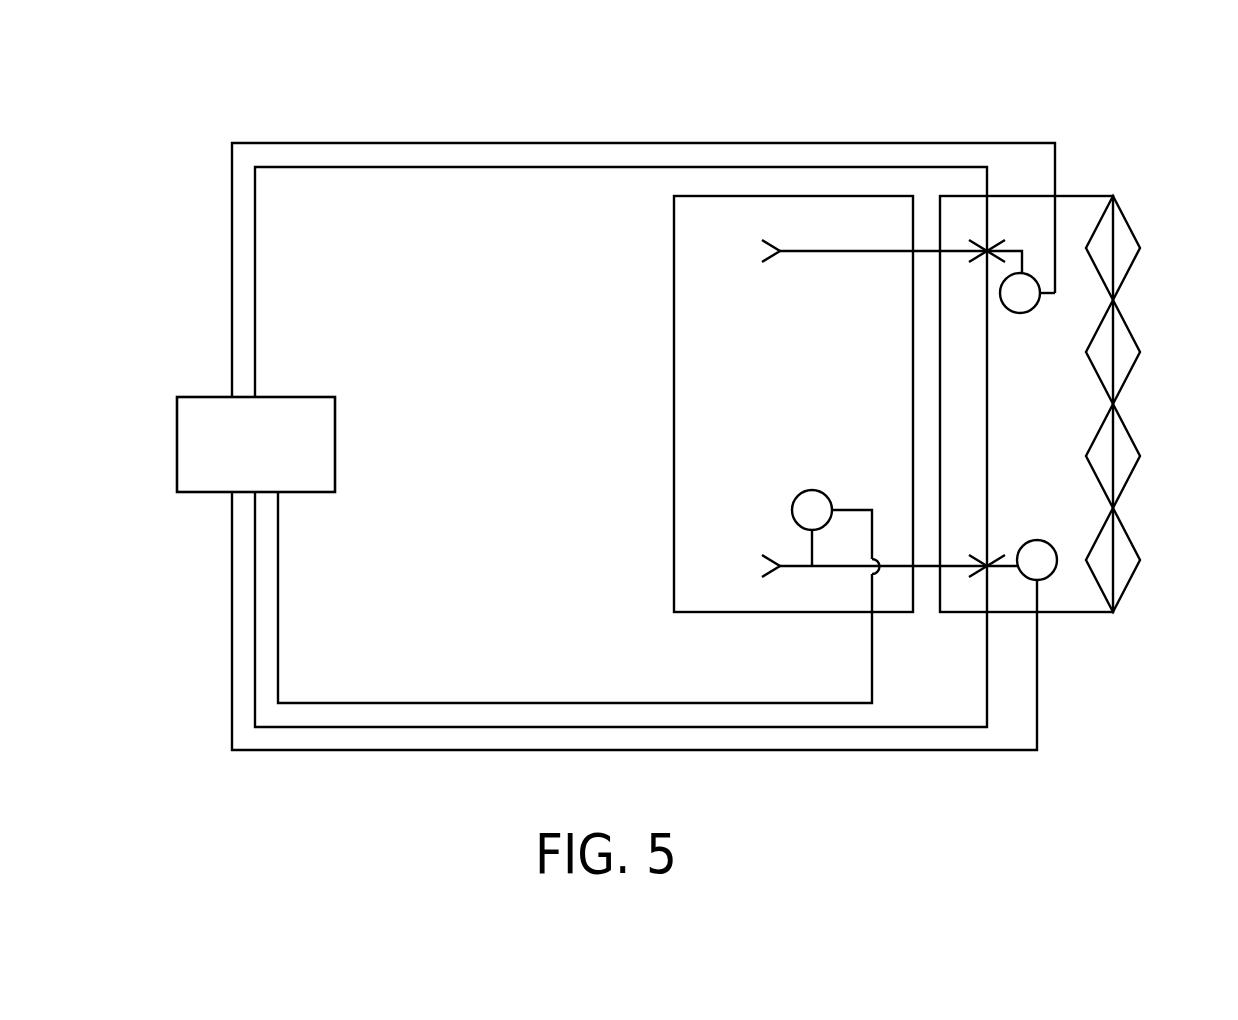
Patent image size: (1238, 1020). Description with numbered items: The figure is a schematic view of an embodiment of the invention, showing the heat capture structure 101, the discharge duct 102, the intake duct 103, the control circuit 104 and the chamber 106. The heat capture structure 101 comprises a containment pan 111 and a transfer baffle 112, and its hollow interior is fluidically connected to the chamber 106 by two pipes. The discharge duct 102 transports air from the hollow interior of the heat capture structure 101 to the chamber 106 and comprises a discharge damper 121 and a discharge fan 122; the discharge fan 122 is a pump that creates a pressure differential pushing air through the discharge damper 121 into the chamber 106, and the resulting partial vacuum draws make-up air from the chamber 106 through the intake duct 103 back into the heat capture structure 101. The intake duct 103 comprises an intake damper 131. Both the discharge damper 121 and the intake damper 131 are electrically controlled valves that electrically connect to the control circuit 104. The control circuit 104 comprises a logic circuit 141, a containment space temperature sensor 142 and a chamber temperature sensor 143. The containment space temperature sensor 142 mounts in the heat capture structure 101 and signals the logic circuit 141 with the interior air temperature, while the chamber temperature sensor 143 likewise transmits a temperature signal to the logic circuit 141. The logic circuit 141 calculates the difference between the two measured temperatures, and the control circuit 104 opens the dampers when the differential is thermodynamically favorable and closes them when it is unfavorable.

The heat capture structure 101 is at (1087, 346).
The discharge duct 102 is at (822, 251).
The intake duct 103 is at (923, 563).
The control circuit 104 is at (152, 155).
The chamber 106 is at (702, 427).
The containment pan 111 is at (1075, 207).
The transfer baffle 112 is at (1127, 223).
The discharge damper 121 is at (990, 264).
The discharge fan 122 is at (1020, 313).
The intake damper 131 is at (990, 555).
The logic circuit 141 is at (312, 408).
The containment space temperature sensor 142 is at (1052, 573).
The chamber temperature sensor 143 is at (812, 490).